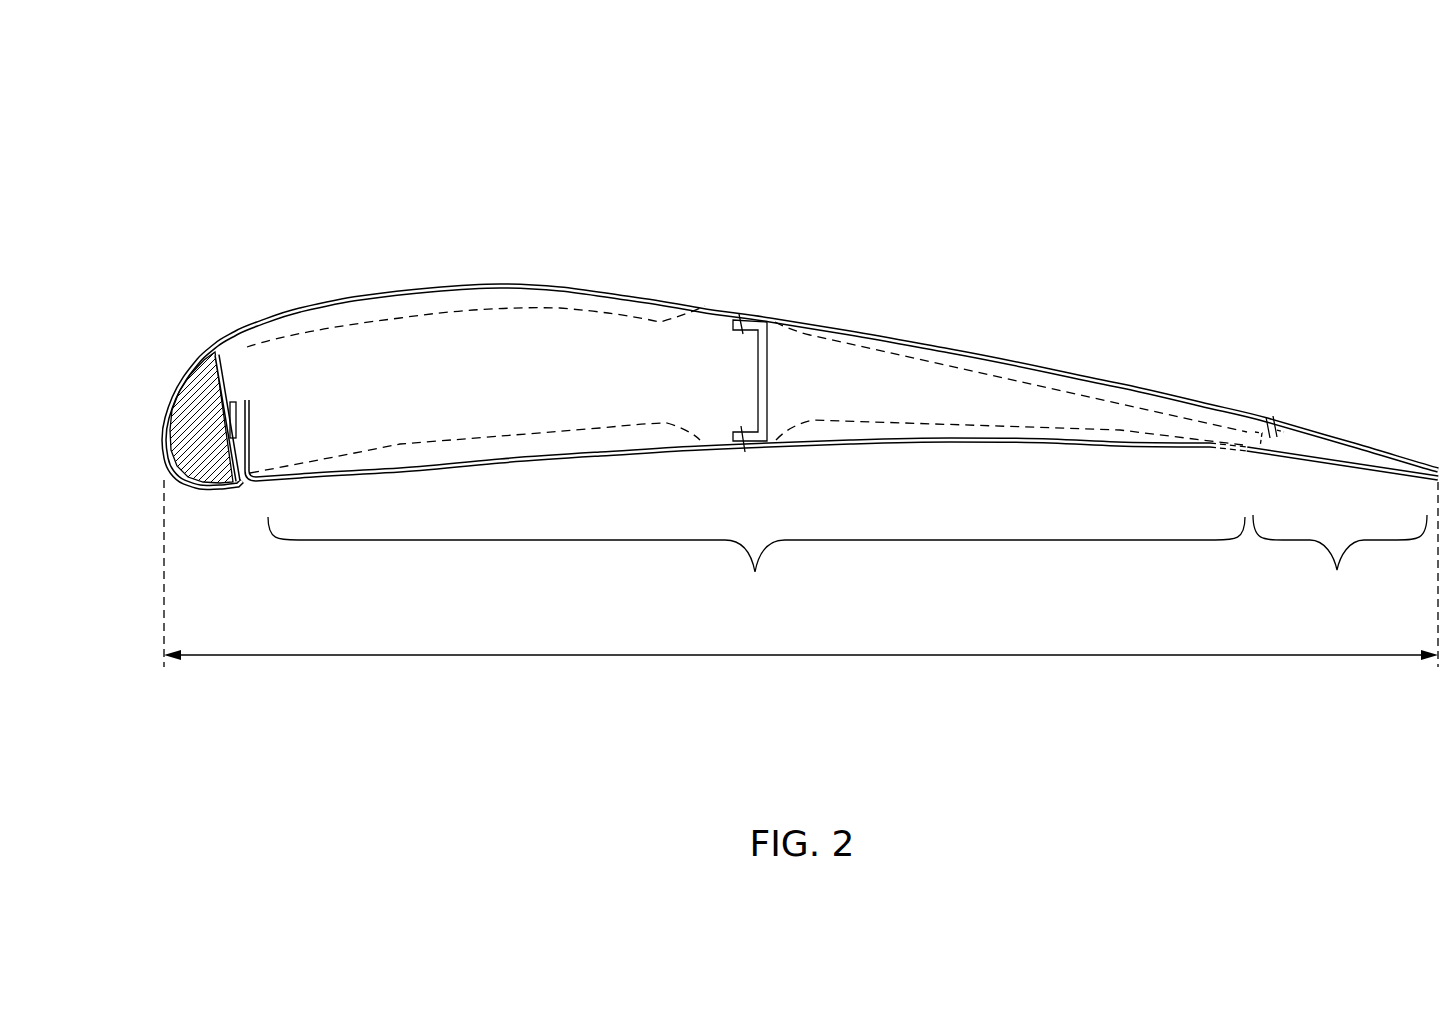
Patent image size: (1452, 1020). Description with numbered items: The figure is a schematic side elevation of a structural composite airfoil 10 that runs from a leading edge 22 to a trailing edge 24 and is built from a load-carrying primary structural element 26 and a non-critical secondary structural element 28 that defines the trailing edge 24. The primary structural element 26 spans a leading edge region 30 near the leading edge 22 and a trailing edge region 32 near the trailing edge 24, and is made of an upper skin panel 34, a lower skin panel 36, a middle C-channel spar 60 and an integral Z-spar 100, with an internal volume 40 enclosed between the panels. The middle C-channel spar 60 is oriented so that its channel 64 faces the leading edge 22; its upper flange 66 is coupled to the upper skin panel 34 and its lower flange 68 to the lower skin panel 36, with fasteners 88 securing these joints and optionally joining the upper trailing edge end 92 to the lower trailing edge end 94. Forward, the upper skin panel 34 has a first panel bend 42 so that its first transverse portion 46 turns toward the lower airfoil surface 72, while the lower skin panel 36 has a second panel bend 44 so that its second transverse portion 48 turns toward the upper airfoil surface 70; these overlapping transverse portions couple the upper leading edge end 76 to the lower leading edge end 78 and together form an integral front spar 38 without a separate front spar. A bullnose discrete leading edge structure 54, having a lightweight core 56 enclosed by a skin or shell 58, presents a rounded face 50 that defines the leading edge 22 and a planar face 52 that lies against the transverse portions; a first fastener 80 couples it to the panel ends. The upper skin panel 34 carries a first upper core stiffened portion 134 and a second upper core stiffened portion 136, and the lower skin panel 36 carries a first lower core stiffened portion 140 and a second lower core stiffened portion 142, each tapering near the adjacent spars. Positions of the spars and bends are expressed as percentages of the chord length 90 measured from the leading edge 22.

The structural composite airfoil 10 is at (1388, 151).
The leading edge 22 is at (112, 285).
The trailing edge 24 is at (1418, 333).
The primary structural element 26 is at (756, 559).
The secondary structural element 28 is at (1340, 559).
The leading edge region 30 is at (270, 250).
The trailing edge region 32 is at (1175, 342).
The upper skin panel 34 is at (632, 295).
The lower skin panel 36 is at (677, 451).
The integral front spar 38 is at (323, 396).
The internal volume 40 is at (483, 387).
The first panel bend 42 is at (215, 354).
The second panel bend 44 is at (250, 478).
The first transverse portion 46 is at (233, 372).
The second transverse portion 48 is at (248, 432).
The rounded face 50 is at (165, 446).
The planar face 52 is at (247, 321).
The discrete leading edge structure 54 is at (181, 428).
The core 56 is at (190, 466).
The skin or shell 58 is at (213, 490).
The middle C-channel spar 60 is at (768, 347).
The channel 64 is at (697, 378).
The upper flange 66 is at (765, 320).
The lower flange 68 is at (748, 443).
The upper airfoil surface 70 is at (372, 299).
The lower airfoil surface 72 is at (190, 492).
The upper leading edge end 76 is at (198, 398).
The lower leading edge end 78 is at (232, 413).
The first fastener 80 is at (242, 398).
The fasteners 88 is at (741, 316).
The chord length 90 is at (1340, 657).
The upper trailing edge end 92 is at (1405, 457).
The lower trailing edge end 94 is at (1258, 454).
The integral Z-spar 100 is at (1237, 430).
The first upper core stiffened portion 134 is at (488, 300).
The second upper core stiffened portion 136 is at (947, 357).
The first lower core stiffened portion 140 is at (550, 442).
The second lower core stiffened portion 142 is at (948, 440).